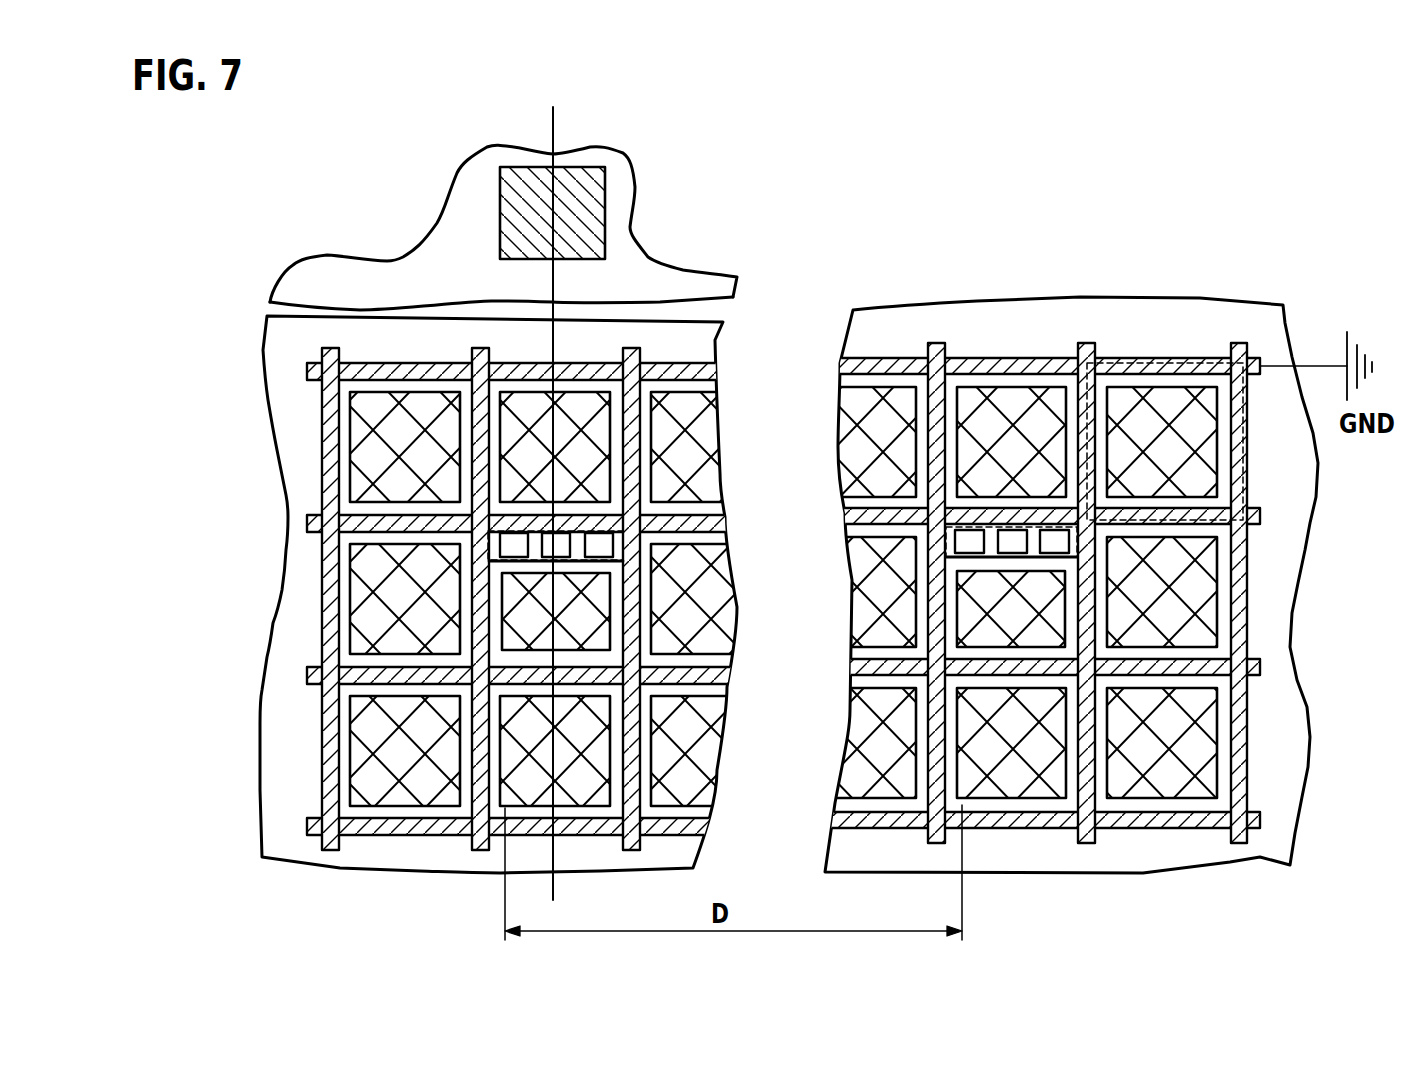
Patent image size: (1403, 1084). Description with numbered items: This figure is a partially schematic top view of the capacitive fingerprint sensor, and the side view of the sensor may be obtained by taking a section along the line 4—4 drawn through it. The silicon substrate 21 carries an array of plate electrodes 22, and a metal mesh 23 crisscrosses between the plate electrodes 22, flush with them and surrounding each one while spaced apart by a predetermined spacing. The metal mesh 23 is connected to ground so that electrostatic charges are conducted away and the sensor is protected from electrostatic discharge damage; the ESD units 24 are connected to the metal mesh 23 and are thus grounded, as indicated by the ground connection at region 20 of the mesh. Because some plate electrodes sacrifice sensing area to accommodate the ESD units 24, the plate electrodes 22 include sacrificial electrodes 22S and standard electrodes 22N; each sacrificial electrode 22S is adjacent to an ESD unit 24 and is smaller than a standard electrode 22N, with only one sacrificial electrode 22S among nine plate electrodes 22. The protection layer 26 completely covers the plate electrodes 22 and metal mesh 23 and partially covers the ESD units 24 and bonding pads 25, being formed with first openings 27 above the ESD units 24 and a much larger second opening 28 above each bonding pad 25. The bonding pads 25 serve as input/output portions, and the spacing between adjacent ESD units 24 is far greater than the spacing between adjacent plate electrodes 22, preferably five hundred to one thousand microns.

The line 4— 4 is at (553, 118).
The ground connection region 20 is at (1145, 366).
The silicon substrate 21 is at (280, 352).
The protection layer 26 is at (1071, 585).
The plate electrode 22 is at (178, 530).
The standard electrode 22N is at (523, 456).
The sacrificial electrode 22S is at (540, 626).
The metal mesh 23 is at (352, 368).
The ESD unit 24 is at (565, 528).
The bonding pad 25 is at (593, 202).
The first opening 27 is at (603, 540).
The second opening 28 is at (503, 192).